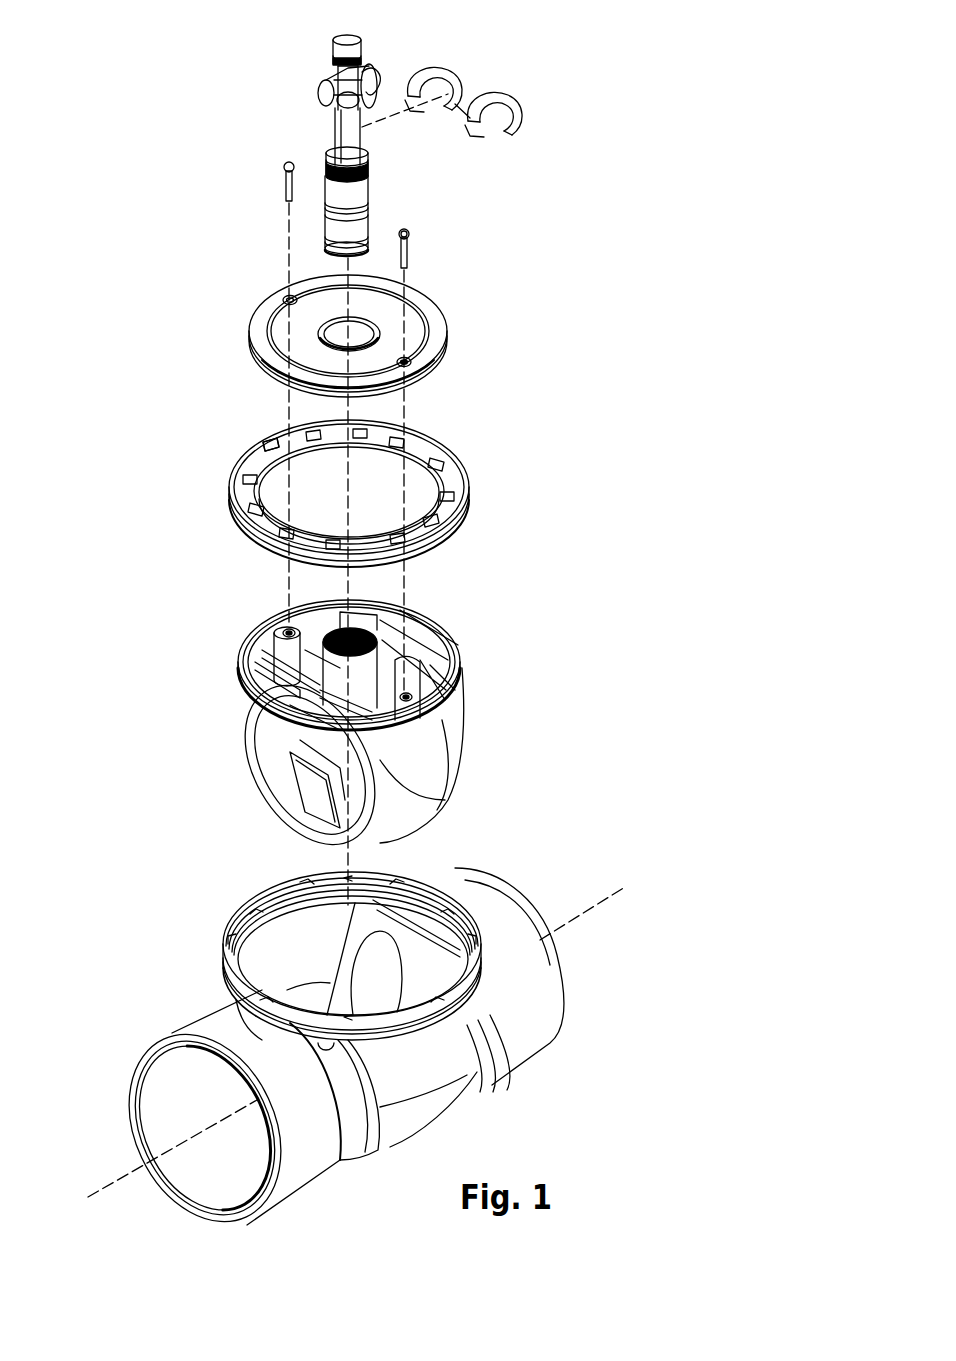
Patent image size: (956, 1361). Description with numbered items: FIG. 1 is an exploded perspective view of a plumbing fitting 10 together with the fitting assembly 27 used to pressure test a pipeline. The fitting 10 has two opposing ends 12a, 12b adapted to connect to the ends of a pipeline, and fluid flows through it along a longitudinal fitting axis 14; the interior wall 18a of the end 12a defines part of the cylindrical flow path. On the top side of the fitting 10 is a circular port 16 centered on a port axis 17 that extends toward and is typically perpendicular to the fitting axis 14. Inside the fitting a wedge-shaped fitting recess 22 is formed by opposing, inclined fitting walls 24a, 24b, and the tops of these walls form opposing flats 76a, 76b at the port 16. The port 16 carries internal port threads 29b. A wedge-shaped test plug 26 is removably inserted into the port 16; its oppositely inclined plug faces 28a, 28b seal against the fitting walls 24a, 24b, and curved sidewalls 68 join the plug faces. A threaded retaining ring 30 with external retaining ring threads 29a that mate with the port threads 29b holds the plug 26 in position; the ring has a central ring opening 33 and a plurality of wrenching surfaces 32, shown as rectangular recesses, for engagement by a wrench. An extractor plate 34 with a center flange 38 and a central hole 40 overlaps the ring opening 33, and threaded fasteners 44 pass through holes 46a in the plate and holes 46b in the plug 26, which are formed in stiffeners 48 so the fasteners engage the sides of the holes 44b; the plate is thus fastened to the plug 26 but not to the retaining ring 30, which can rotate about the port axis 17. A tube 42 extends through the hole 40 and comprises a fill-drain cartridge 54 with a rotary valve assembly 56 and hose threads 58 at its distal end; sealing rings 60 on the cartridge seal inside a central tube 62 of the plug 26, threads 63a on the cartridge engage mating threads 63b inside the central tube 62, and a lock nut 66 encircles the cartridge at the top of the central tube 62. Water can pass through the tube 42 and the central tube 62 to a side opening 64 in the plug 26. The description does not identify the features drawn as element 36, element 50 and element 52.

The plumbing fitting 10 is at (175, 937).
The fitting end 12a is at (185, 1034).
The fitting end 12b is at (560, 975).
The longitudinal fitting axis 14 is at (600, 903).
The port 16 is at (443, 655).
The port axis 17 is at (350, 585).
The interior wall 18a is at (215, 1079).
The fitting recess 22 is at (287, 928).
The inclined fitting wall 24a is at (257, 981).
The inclined fitting wall 24b is at (368, 922).
The wedge-shaped test plug 26 is at (467, 688).
The fitting assembly 27 is at (572, 443).
The plug face 28a is at (272, 737).
The plug face 28b is at (458, 733).
The retaining ring threads 29a is at (457, 527).
The port threads 29b is at (429, 899).
The retaining ring 30 is at (472, 495).
The wrenching surfaces 32 is at (443, 467).
The central ring opening 33 is at (262, 445).
The extractor plate 34 is at (447, 322).
The cover plate rim 36 is at (390, 390).
The center flange 38 is at (433, 360).
The central hole 40 is at (378, 322).
The tube 42 is at (332, 130).
The threaded fasteners 44 is at (283, 187).
The holes 44b is at (407, 698).
The extractor plate holes 46a is at (290, 297).
The plug holes 46b is at (282, 625).
The stiffeners 48 is at (293, 650).
The screw head 50 is at (412, 232).
The spout opening 52 is at (342, 752).
The fill-drain cartridge 54 is at (317, 92).
The rotary valve assembly 56 is at (383, 78).
The threads 58 is at (333, 56).
The sealing rings 60 is at (369, 233).
The central tube 62 is at (338, 667).
The cartridge threads 63a is at (368, 165).
The central tube threads 63b is at (407, 635).
The side opening 64 is at (312, 788).
The lock nut 66 is at (498, 105).
The curved sidewalls 68 is at (397, 783).
The flat 76a is at (277, 692).
The flat 76b is at (413, 620).